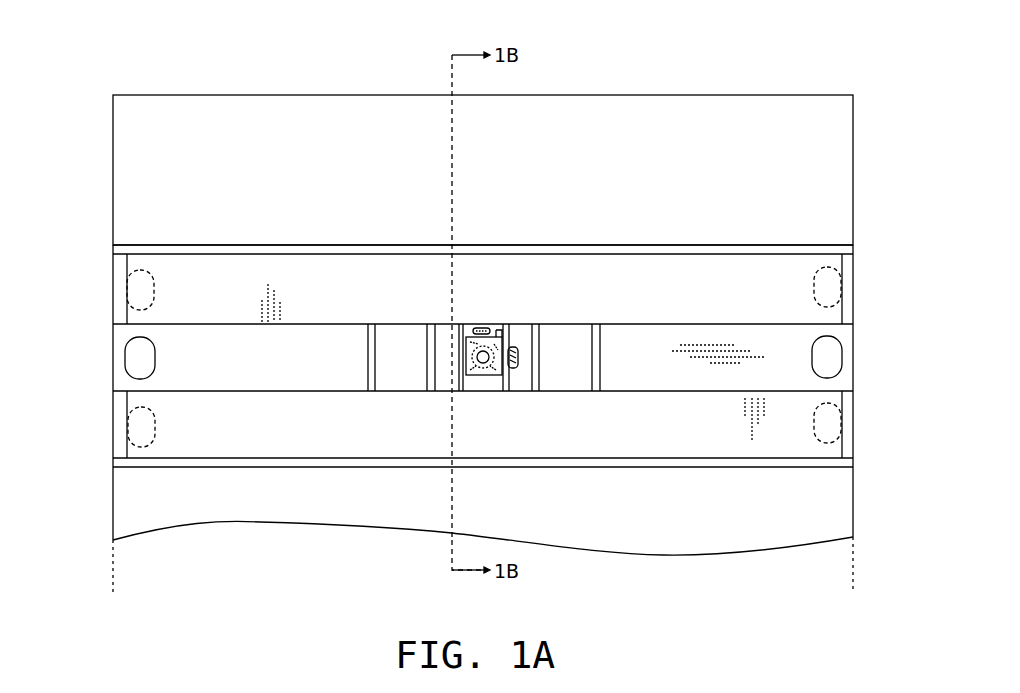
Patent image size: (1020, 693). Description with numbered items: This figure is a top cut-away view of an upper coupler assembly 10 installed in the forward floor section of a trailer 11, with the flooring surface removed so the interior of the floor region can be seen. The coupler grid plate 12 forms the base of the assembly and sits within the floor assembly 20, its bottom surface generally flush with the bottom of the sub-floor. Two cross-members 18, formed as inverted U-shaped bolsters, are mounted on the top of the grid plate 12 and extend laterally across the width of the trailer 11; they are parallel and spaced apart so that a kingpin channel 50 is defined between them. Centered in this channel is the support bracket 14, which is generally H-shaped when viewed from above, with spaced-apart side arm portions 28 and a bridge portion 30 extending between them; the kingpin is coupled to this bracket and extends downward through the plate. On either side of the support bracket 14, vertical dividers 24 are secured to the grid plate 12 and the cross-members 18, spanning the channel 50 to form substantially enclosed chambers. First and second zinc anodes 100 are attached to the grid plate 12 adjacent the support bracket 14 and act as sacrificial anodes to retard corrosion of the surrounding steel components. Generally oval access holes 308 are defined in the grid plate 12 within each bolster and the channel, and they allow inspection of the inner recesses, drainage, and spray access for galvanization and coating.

The upper coupler assembly 10 is at (142, 36).
The trailer 11 is at (842, 62).
The coupler grid plate 12 is at (846, 334).
The support bracket 14 is at (486, 386).
The cross-member 18 is at (165, 315).
The floor assembly 20 is at (846, 143).
The divider 24 is at (368, 376).
The side arm portion 28 is at (455, 376).
The bridge portion 30 is at (502, 333).
The kingpin channel 50 is at (122, 385).
The anode 100 is at (483, 327).
The access hole 308 is at (138, 295).